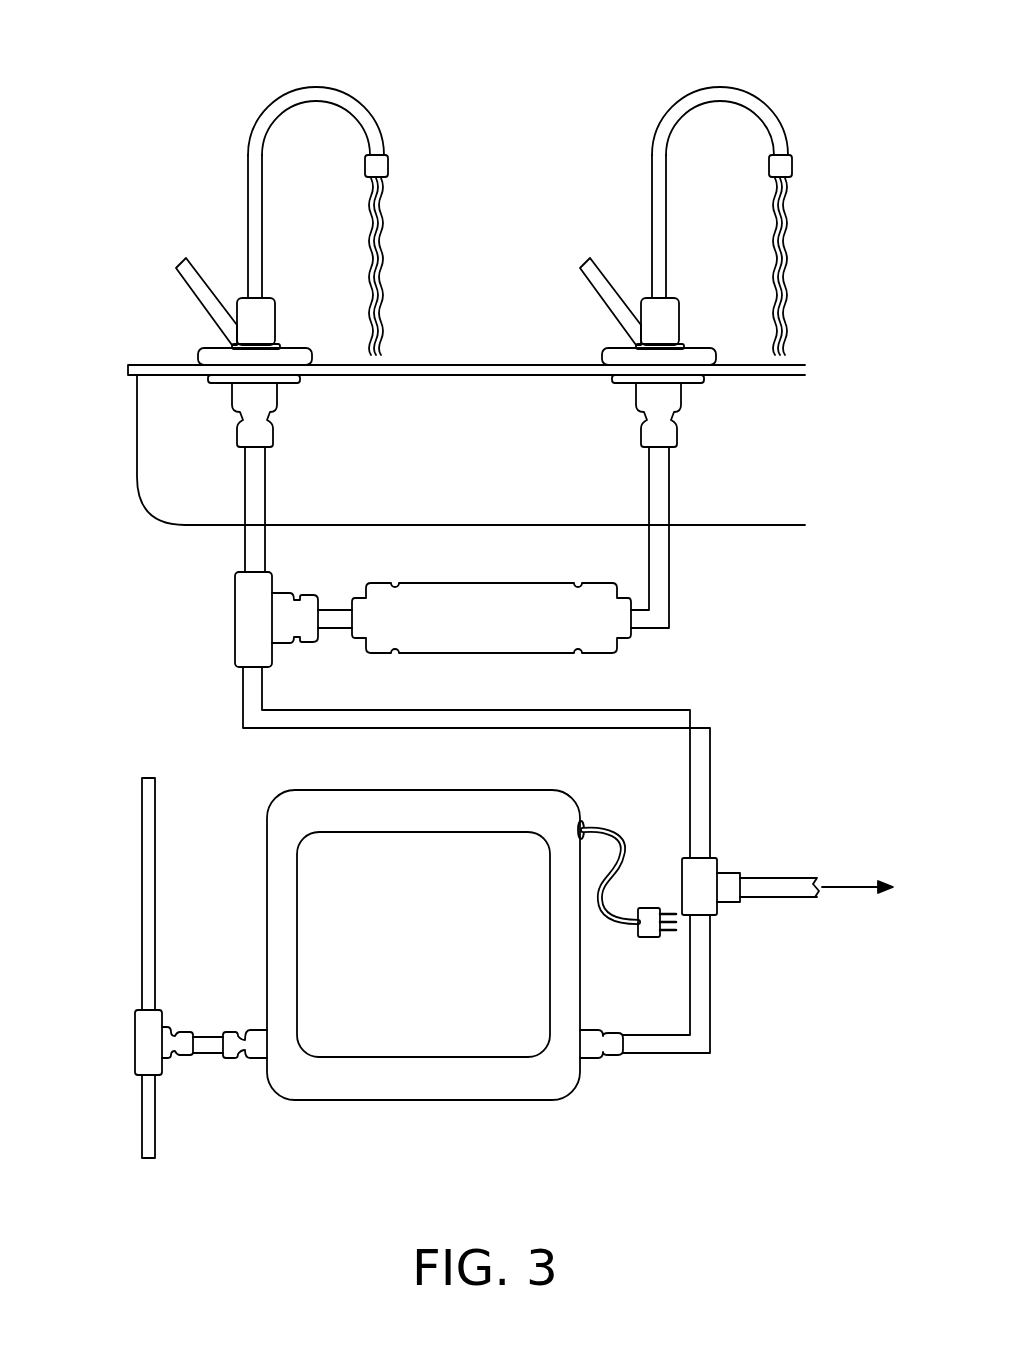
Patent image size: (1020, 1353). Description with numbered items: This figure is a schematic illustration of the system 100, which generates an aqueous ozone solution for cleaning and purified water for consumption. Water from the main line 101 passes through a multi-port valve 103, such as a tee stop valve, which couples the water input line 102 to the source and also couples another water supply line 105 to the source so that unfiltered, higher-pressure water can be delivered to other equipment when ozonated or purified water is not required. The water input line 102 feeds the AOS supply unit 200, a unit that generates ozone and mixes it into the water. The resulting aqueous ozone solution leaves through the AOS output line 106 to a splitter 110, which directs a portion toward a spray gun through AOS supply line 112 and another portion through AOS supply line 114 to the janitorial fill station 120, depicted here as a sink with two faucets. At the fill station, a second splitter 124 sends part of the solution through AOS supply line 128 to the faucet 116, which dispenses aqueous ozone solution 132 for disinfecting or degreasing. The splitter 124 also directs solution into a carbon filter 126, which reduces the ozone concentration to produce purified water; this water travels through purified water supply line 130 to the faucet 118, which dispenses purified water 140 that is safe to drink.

The system 100 is at (222, 60).
The main line 101 is at (140, 1122).
The water input line 102 is at (207, 1055).
The multi-port valve 103 is at (140, 1043).
The water supply line 105 is at (155, 898).
The AOS output line 106 is at (712, 985).
The splitter 110 is at (722, 883).
The AOS supply line 112 is at (762, 898).
The AOS supply line 114 is at (668, 710).
The faucet 116 is at (318, 88).
The faucet 118 is at (722, 88).
The janitorial fill station 120 is at (137, 435).
The splitter 124 is at (245, 622).
The carbon filter 126 is at (490, 583).
The AOS supply line 128 is at (267, 483).
The purified water supply line 130 is at (669, 483).
The aqueous ozone solution 132 is at (385, 265).
The purified water 140 is at (789, 268).
The AOS supply unit 200 is at (516, 1097).